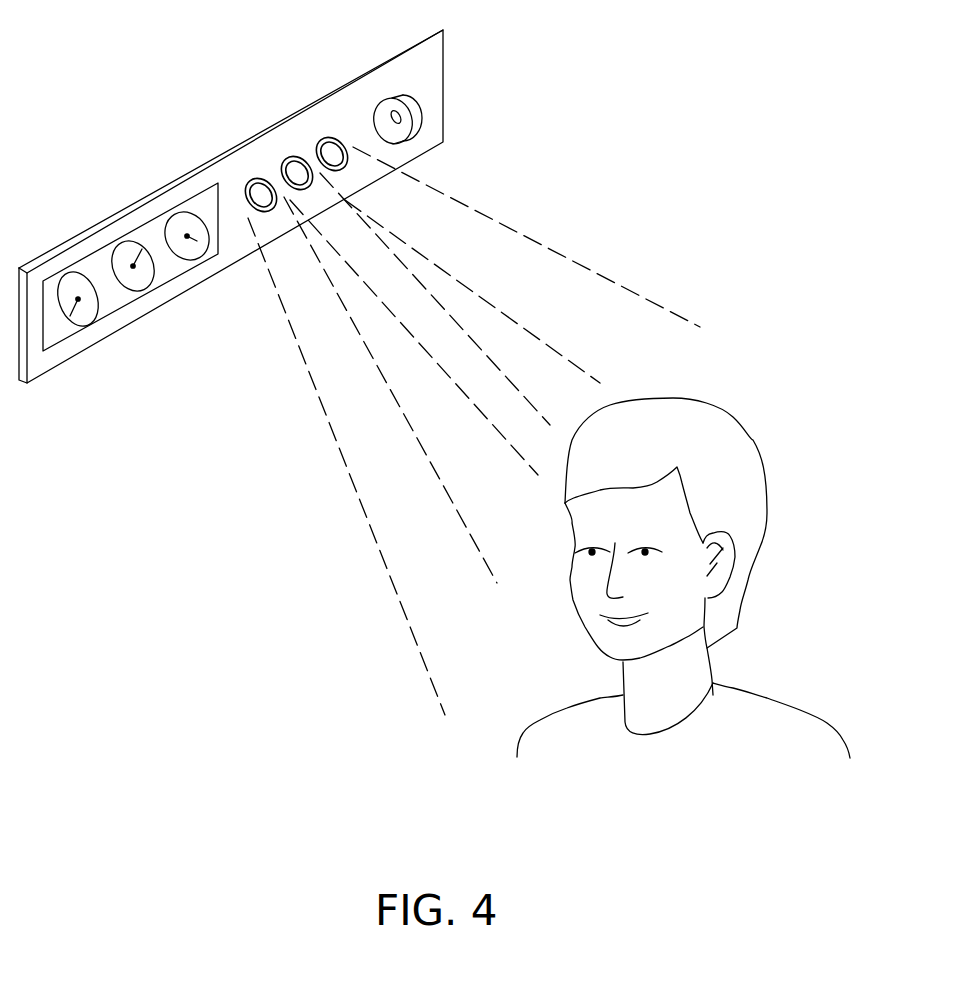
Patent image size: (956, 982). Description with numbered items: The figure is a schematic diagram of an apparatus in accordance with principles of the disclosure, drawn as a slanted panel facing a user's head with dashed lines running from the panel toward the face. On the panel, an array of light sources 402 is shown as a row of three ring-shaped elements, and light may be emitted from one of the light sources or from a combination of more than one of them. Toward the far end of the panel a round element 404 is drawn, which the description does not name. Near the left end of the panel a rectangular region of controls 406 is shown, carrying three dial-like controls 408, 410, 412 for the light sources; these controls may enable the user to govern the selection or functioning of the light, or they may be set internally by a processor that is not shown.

The array of light sources 402 is at (345, 131).
The camera 404 is at (422, 113).
The controls 406 is at (97, 323).
The control 408 is at (76, 280).
The control 410 is at (133, 243).
The control 412 is at (186, 212).